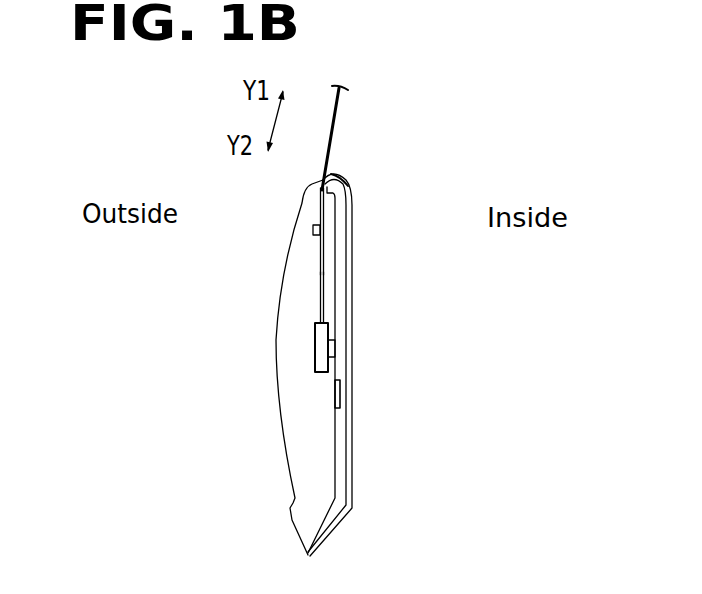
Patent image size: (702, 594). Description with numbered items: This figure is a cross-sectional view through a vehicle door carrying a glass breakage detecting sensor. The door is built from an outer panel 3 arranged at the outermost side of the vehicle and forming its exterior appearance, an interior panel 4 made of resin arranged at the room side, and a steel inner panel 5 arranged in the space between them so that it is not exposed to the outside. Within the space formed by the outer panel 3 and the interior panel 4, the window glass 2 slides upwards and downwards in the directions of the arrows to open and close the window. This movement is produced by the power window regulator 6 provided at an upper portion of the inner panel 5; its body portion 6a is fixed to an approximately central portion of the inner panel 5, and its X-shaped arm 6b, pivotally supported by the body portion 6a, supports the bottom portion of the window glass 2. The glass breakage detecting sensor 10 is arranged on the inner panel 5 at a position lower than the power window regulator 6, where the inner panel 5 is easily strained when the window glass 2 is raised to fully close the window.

The window glass 2 is at (331, 135).
The outer panel 3 is at (293, 222).
The interior panel 4 is at (354, 488).
The inner panel 5 is at (335, 438).
The power window regulator 6 is at (197, 266).
The body portion 6a is at (318, 348).
The X-shaped arm 6b is at (321, 278).
The glass breakage detecting sensor 10 is at (346, 396).